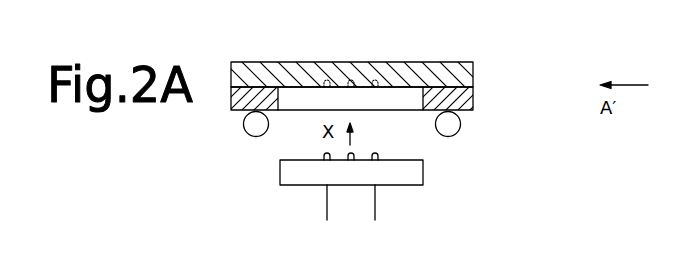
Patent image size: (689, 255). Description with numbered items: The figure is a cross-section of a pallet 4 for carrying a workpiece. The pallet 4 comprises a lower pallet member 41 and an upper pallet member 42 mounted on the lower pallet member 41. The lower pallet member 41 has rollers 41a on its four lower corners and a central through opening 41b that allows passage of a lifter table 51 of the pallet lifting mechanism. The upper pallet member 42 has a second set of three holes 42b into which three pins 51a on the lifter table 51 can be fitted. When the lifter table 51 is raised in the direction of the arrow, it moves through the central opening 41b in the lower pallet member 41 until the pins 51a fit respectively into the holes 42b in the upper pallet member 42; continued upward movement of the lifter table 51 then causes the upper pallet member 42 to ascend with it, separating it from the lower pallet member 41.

The pallet 4 is at (385, 126).
The lower pallet member 41 is at (468, 95).
The rollers 41a is at (244, 128).
The central through opening 41b is at (297, 98).
The upper pallet member 42 is at (421, 81).
The second set of three holes 42b is at (338, 81).
The lifter table 51 is at (404, 195).
The pins 51a is at (377, 154).